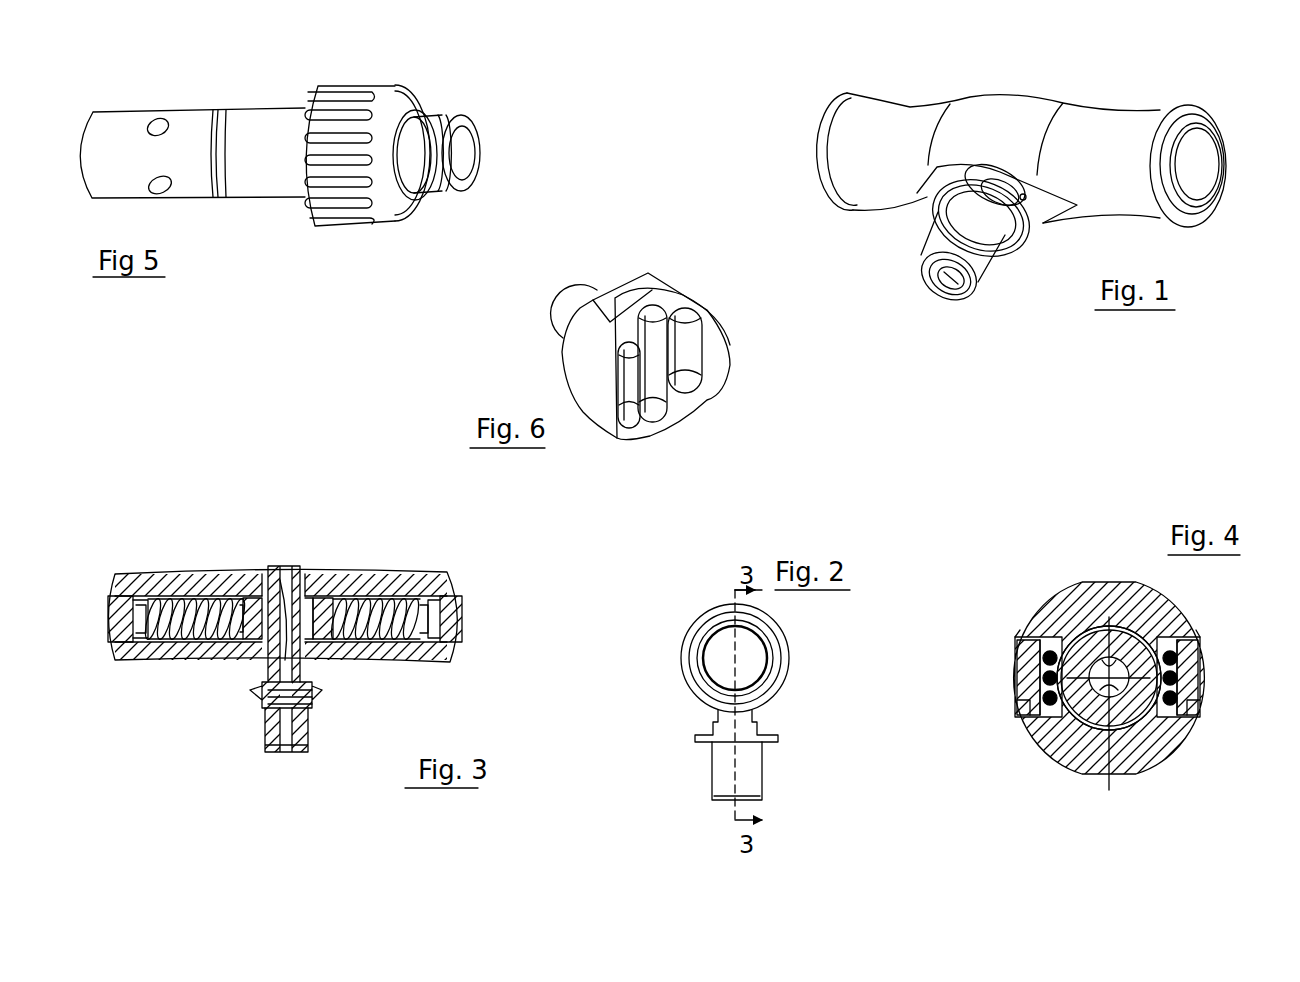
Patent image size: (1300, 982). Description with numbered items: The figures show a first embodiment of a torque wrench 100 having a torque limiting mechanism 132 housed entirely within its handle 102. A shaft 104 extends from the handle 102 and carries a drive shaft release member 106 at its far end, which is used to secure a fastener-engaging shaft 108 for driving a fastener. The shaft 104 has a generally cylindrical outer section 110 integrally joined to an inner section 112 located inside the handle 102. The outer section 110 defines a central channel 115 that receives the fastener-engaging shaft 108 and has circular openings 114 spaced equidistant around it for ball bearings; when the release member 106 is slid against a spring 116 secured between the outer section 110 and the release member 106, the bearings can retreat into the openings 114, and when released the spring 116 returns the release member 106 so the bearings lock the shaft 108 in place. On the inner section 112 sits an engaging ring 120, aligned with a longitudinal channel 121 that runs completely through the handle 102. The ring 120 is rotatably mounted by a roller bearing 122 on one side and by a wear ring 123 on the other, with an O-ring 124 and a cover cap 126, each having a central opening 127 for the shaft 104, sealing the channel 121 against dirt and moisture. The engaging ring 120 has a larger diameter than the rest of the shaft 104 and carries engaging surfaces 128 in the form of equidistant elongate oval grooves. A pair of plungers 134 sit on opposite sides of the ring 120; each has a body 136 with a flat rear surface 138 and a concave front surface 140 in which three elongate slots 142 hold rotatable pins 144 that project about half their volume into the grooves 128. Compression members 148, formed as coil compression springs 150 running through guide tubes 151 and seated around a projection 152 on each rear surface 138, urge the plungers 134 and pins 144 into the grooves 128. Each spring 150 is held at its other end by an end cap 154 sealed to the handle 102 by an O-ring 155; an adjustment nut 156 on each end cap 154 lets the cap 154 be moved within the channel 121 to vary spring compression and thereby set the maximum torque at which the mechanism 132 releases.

In FIG. 1, the torque wrench 100 is at (897, 72).
In FIG. 1, the handle 102 is at (1018, 102).
In FIG. 2, the handle 102 is at (712, 607).
In FIG. 3, the handle 102 is at (423, 660).
In FIG. 4, the handle 102 is at (1085, 573).
In FIG. 5, the shaft 104 is at (246, 212).
In FIG. 1, the shaft 104 is at (1043, 232).
In FIG. 2, the shaft 104 is at (752, 712).
In FIG. 3, the shaft 104 is at (302, 660).
In FIG. 1, the drive shaft release member 106 is at (927, 240).
In FIG. 2, the drive shaft release member 106 is at (763, 774).
In FIG. 3, the drive shaft release member 106 is at (308, 745).
In FIG. 4, the fastener-engaging shaft 108 is at (1108, 726).
In FIG. 5, the outer section 110 is at (115, 108).
In FIG. 3, the outer section 110 is at (272, 668).
In FIG. 5, the inner section 112 is at (485, 113).
In FIG. 3, the inner section 112 is at (284, 563).
In FIG. 5, the circular openings 114 is at (160, 182).
In FIG. 3, the circular openings 114 is at (264, 680).
In FIG. 5, the central channel 115 is at (463, 153).
In FIG. 3, the central channel 115 is at (297, 707).
In FIG. 3, the spring 116 is at (307, 692).
In FIG. 5, the engaging ring 120 is at (311, 94).
In FIG. 3, the engaging ring 120 is at (300, 580).
In FIG. 4, the engaging ring 120 is at (1113, 643).
In FIG. 3, the longitudinal channel 121 is at (289, 560).
In FIG. 3, the roller bearing 122 is at (272, 575).
In FIG. 3, the wear ring 123 is at (262, 628).
In FIG. 3, the O-ring 124 is at (252, 644).
In FIG. 3, the cover cap 126 is at (270, 650).
In FIG. 3, the central opening 127 is at (275, 655).
In FIG. 5, the engaging surfaces 128 is at (343, 203).
In FIG. 4, the engaging surfaces 128 is at (1140, 727).
In FIG. 3, the torque limiting mechanism 132 is at (318, 597).
In FIG. 4, the torque limiting mechanism 132 is at (1107, 620).
In FIG. 6, the plungers 134 is at (662, 262).
In FIG. 3, the plungers 134 is at (243, 587).
In FIG. 4, the plungers 134 is at (1010, 678).
In FIG. 6, the body 136 is at (578, 370).
In FIG. 4, the body 136 is at (1183, 643).
In FIG. 6, the flat rear surface 138 is at (612, 295).
In FIG. 4, the flat rear surface 138 is at (1017, 657).
In FIG. 6, the concave front surface 140 is at (723, 340).
In FIG. 4, the concave front surface 140 is at (1073, 627).
In FIG. 6, the elongate slots 142 is at (688, 382).
In FIG. 3, the pins 144 is at (255, 595).
In FIG. 4, the pins 144 is at (1040, 670).
In FIG. 3, the compression members 148 is at (370, 596).
In FIG. 3, the compression springs 150 is at (160, 597).
In FIG. 4, the compression springs 150 is at (1013, 703).
In FIG. 3, the guide tubes 151 is at (190, 588).
In FIG. 6, the projection 152 is at (565, 318).
In FIG. 4, the projection 152 is at (1008, 688).
In FIG. 3, the end cap 154 is at (107, 640).
In FIG. 3, the O-ring 155 is at (130, 585).
In FIG. 3, the adjustment nut 156 is at (160, 597).